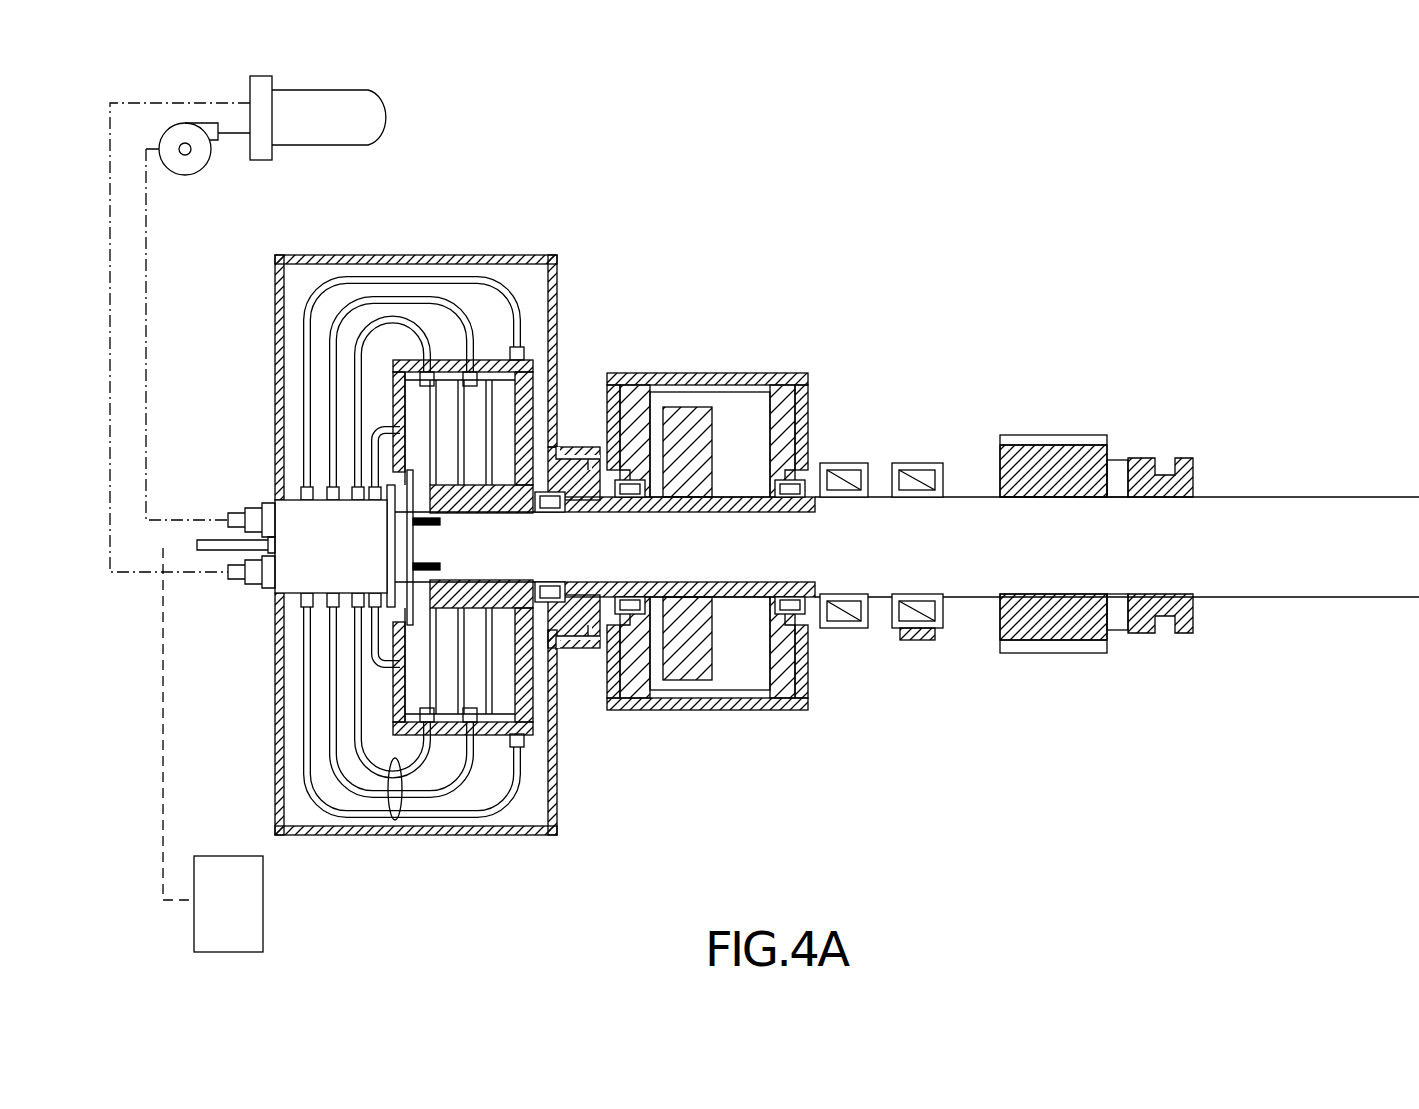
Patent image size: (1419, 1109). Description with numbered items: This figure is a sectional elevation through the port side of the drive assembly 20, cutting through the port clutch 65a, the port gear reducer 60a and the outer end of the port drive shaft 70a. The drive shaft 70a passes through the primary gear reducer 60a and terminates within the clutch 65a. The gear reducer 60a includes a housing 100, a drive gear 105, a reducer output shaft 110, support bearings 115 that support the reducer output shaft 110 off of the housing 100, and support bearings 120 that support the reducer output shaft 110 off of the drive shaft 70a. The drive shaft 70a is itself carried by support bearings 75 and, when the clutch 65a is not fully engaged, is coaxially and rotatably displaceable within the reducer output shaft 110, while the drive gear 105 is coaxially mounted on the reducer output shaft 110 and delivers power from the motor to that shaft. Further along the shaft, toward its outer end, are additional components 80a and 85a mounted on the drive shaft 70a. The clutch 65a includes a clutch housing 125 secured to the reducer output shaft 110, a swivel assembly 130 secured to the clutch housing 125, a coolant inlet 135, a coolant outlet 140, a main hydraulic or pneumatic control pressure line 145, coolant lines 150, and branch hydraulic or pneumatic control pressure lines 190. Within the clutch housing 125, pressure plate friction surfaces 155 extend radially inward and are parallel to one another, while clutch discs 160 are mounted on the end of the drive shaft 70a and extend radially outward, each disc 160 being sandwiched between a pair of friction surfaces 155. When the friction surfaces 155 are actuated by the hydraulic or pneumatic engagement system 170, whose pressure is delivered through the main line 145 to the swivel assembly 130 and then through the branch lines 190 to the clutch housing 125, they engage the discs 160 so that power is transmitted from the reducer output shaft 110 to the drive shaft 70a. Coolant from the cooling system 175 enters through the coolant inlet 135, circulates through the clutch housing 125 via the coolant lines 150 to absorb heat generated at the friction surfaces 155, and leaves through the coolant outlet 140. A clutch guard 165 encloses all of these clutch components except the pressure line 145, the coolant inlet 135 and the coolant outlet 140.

The bearing assembly 20 is at (950, 250).
The port gear reducer 60a is at (827, 745).
The port clutch 65a is at (565, 240).
The port drive shaft 70a is at (955, 597).
The support bearings 75 is at (910, 463).
The spacer block 80a is at (1085, 653).
The coupling 85a is at (1193, 470).
The housing 100 is at (751, 373).
The drive gear 105 is at (718, 674).
The reducer output shaft 110 is at (786, 450).
The support bearings 115 is at (628, 597).
The support bearings 120 is at (843, 463).
The clutch housing 125 is at (560, 375).
The swivel assembly 130 is at (276, 598).
The coolant inlet 135 is at (228, 577).
The coolant outlet 140 is at (228, 519).
The main hydraulic or pneumatic control pressure line 145 is at (197, 545).
The coolant lines 150 is at (396, 820).
The pressure plate friction surfaces 155 is at (458, 452).
The clutch discs 160 is at (480, 640).
The clutch guard 165 is at (551, 298).
The hydraulic or pneumatic engagement system 170 is at (247, 917).
The cooling system 175 is at (395, 108).
The branch hydraulic or pneumatic control pressure lines 190 is at (385, 480).